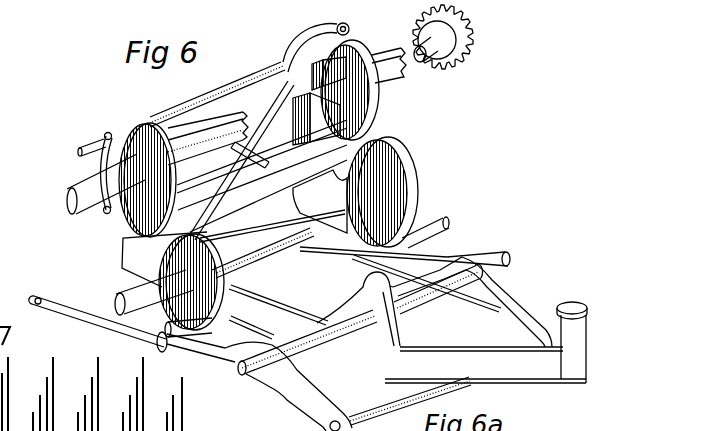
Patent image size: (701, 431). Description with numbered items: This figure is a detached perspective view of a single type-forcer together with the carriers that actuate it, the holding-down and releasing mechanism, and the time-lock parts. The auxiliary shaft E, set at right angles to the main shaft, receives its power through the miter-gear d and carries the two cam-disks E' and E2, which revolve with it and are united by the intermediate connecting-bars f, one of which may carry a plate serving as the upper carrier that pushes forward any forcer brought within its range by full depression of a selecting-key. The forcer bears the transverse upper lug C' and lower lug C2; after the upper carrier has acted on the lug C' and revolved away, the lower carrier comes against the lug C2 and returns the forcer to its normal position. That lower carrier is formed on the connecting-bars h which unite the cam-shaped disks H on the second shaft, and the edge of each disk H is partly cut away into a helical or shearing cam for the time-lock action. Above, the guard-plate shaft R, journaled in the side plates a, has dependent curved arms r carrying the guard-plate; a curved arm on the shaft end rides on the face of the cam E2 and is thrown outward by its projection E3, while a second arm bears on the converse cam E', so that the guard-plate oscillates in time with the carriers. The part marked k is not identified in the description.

The miter-gear d is at (463, 38).
The cam-disk E' is at (331, 81).
The shaft R is at (217, 94).
The cam-disk E2 is at (121, 169).
The dependent curved arms r is at (95, 173).
The auxiliary shaft E is at (287, 106).
The upper transverse lug C' is at (241, 160).
The lower transverse lug C2 is at (259, 150).
The connecting-bars f is at (319, 101).
The guide plate k is at (320, 201).
The connecting-bars h is at (313, 184).
The cam-shaped disks H is at (412, 186).
The projection E3 is at (161, 265).
The side plates a is at (283, 254).